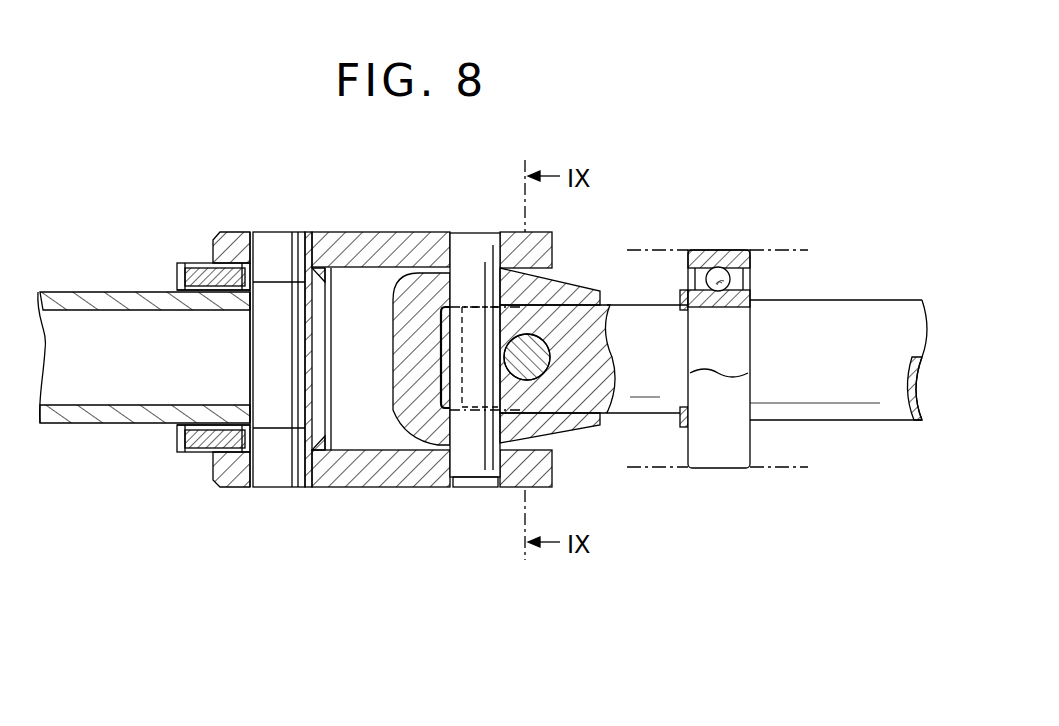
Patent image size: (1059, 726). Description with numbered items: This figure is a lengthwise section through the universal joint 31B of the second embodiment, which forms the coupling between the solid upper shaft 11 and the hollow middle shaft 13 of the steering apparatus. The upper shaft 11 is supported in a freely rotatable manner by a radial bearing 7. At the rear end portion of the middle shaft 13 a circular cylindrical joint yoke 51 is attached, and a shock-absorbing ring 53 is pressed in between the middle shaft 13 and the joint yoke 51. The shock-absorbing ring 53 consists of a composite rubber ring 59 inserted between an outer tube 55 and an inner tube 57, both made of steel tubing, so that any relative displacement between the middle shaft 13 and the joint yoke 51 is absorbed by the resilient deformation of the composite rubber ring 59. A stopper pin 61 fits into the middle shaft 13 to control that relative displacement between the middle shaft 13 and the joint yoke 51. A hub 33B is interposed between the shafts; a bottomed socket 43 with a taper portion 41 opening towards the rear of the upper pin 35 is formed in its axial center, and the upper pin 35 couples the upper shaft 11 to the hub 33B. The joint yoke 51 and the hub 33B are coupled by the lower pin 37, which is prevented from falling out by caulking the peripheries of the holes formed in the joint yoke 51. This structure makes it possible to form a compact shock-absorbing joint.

The radial bearing 7 is at (718, 452).
The upper shaft 11 is at (858, 308).
The middle shaft 13 is at (90, 292).
The universal joint 31B is at (624, 238).
The hub 33B is at (386, 414).
The upper pin 35 is at (565, 425).
The lower pin 37 is at (472, 468).
The taper portion 41 is at (582, 300).
The bottomed socket 43 is at (600, 300).
The joint yoke 51 is at (398, 245).
The shock-absorbing ring 53 is at (186, 262).
The outer tube 55 is at (195, 455).
The inner tube 57 is at (177, 430).
The composite rubber ring 59 is at (177, 440).
The stopper pin 61 is at (280, 245).